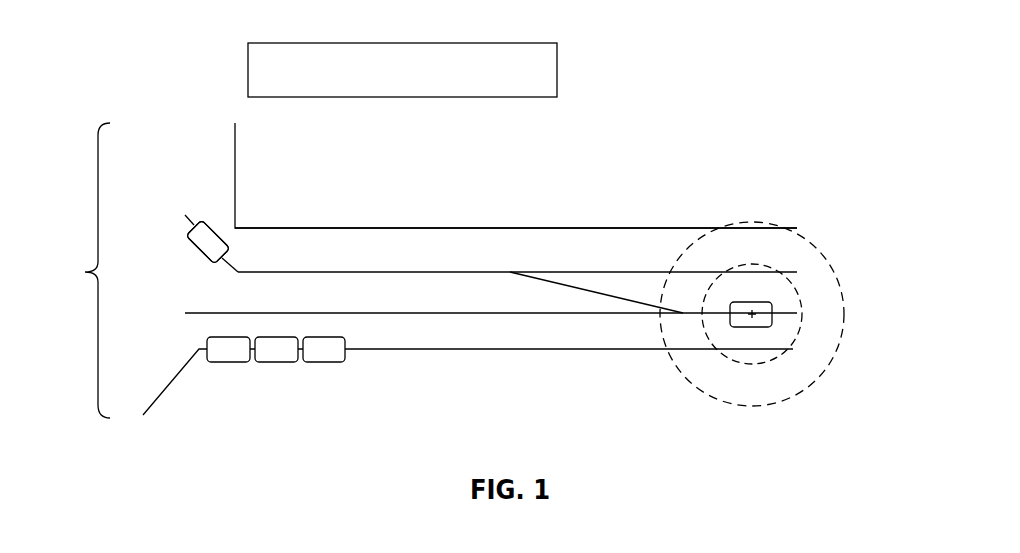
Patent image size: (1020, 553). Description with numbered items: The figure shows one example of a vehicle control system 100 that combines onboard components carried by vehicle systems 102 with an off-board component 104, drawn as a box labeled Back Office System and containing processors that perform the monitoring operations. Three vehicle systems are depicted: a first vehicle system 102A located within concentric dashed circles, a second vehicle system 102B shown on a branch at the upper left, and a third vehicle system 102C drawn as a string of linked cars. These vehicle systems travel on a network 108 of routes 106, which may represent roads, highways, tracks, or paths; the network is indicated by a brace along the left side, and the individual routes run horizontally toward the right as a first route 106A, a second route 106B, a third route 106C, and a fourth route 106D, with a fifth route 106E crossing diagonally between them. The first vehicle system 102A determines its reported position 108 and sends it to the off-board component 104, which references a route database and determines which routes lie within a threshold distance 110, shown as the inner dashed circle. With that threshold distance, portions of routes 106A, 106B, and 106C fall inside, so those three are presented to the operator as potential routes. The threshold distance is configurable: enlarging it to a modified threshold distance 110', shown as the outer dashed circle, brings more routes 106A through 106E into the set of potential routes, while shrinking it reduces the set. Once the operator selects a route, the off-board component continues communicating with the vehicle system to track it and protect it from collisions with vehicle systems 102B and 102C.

The vehicle control system 100 is at (176, 58).
The vehicle systems 102 is at (183, 228).
The first vehicle system 102A is at (752, 328).
The second vehicle system 102B is at (199, 253).
The third vehicle system 102C is at (345, 370).
The off-board component 104 is at (455, 98).
The routes 106 is at (411, 226).
The first potential route 106A is at (560, 314).
The second potential route 106B is at (540, 350).
The third potential route 106C is at (455, 273).
The fourth route 106D is at (520, 229).
The fifth route 106E is at (543, 283).
The reported position 108 is at (856, 258).
The threshold distance 110 is at (809, 321).
The modified threshold distance 110' is at (767, 323).